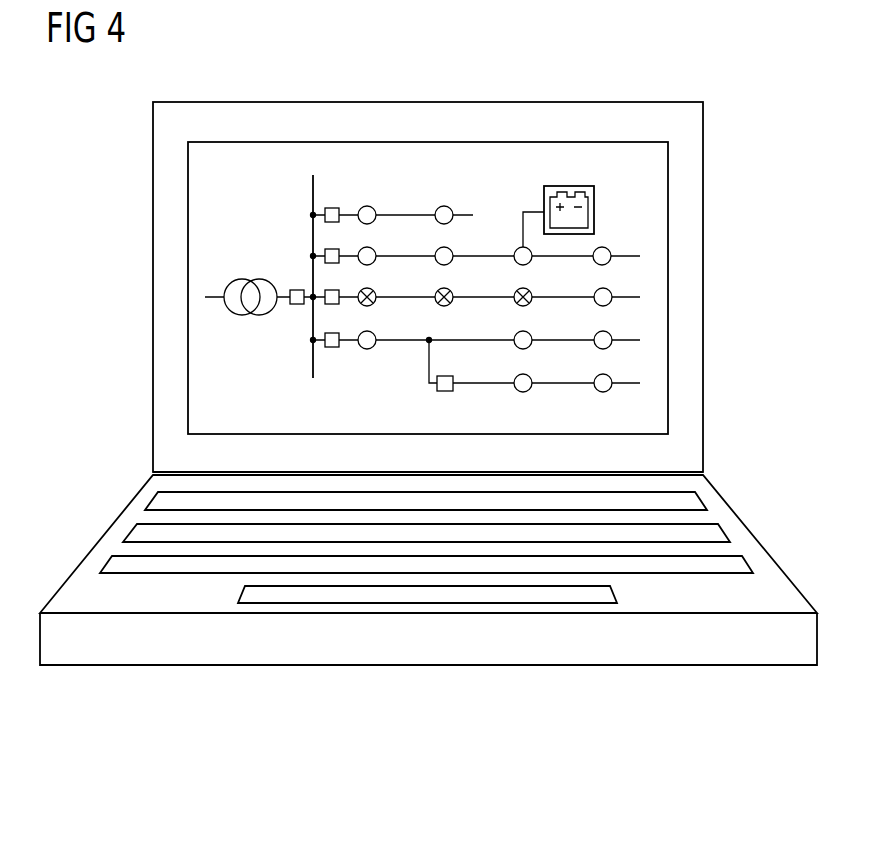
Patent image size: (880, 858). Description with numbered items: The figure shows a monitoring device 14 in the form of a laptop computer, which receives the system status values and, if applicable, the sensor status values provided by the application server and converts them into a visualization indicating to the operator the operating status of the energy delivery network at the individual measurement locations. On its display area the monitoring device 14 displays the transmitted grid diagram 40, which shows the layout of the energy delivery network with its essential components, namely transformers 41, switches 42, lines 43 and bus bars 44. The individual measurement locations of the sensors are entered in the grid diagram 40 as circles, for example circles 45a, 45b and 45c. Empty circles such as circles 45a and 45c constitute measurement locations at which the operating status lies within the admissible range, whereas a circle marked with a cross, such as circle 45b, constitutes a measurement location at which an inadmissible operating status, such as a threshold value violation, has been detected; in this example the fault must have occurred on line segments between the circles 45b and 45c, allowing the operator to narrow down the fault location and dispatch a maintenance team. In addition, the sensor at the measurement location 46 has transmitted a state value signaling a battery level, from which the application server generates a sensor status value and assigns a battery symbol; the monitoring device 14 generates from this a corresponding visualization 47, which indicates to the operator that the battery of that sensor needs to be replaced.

The monitoring device 14 is at (418, 666).
The grid diagram 40 is at (398, 148).
The transformers 41 is at (249, 316).
The switches 42 is at (437, 385).
The lines 43 is at (425, 215).
The bus bars 44 is at (312, 235).
The circle 45a is at (607, 392).
The circle marked with a cross 45b is at (530, 305).
The circle 45c is at (608, 305).
The measurement location 46 is at (522, 247).
The visualization 47 is at (594, 210).